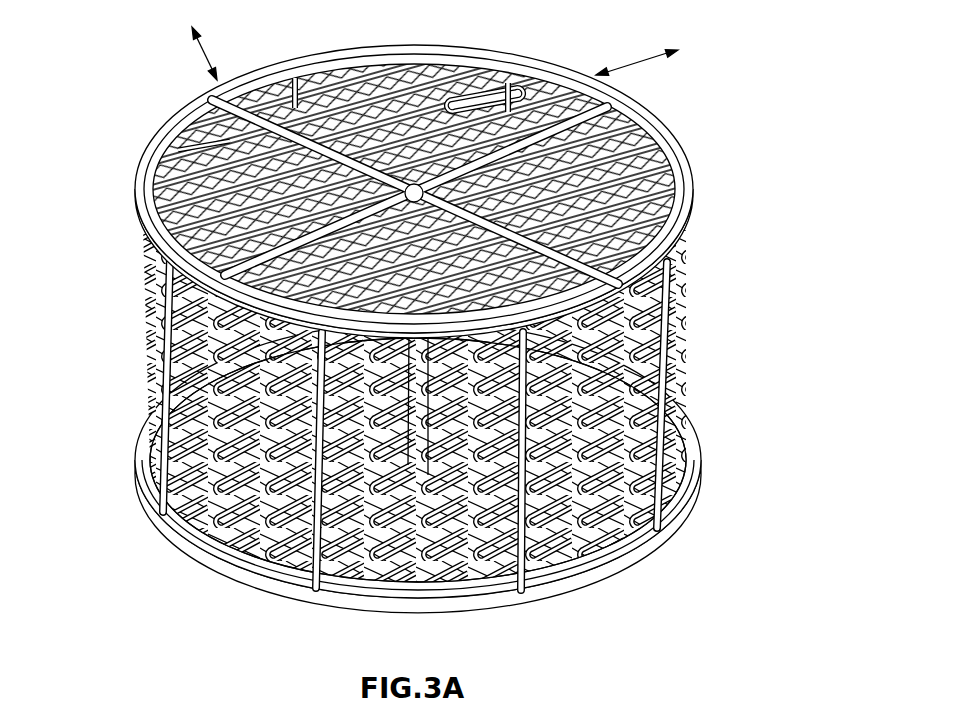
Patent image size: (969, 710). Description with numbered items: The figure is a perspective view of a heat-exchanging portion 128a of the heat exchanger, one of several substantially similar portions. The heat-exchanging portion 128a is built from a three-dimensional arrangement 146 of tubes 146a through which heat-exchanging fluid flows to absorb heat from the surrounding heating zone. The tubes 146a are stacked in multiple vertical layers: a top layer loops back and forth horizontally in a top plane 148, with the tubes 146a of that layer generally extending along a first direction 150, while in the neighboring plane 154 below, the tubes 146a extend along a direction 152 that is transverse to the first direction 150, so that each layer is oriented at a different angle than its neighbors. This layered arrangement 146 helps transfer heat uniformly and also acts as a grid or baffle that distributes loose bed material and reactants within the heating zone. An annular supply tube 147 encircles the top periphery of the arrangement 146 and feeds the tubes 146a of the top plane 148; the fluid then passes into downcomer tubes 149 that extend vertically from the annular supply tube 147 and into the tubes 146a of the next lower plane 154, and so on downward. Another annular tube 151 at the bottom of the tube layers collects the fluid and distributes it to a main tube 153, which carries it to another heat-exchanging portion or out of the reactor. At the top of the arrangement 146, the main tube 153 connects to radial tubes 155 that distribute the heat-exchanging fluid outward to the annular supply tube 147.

The heat-exchanging portion 128a is at (213, 574).
The three-dimensional arrangement 146 is at (369, 77).
The tubes 146a is at (471, 94).
The annular supply tube 147 is at (684, 214).
The top plane 148 is at (161, 151).
The downcomer tubes 149 is at (667, 418).
The first direction 150 is at (620, 66).
The annular tube 151 is at (651, 540).
The direction 152 is at (206, 52).
The main tube 153 is at (410, 465).
The neighboring plane 154 is at (141, 252).
The radial tubes 155 is at (603, 114).